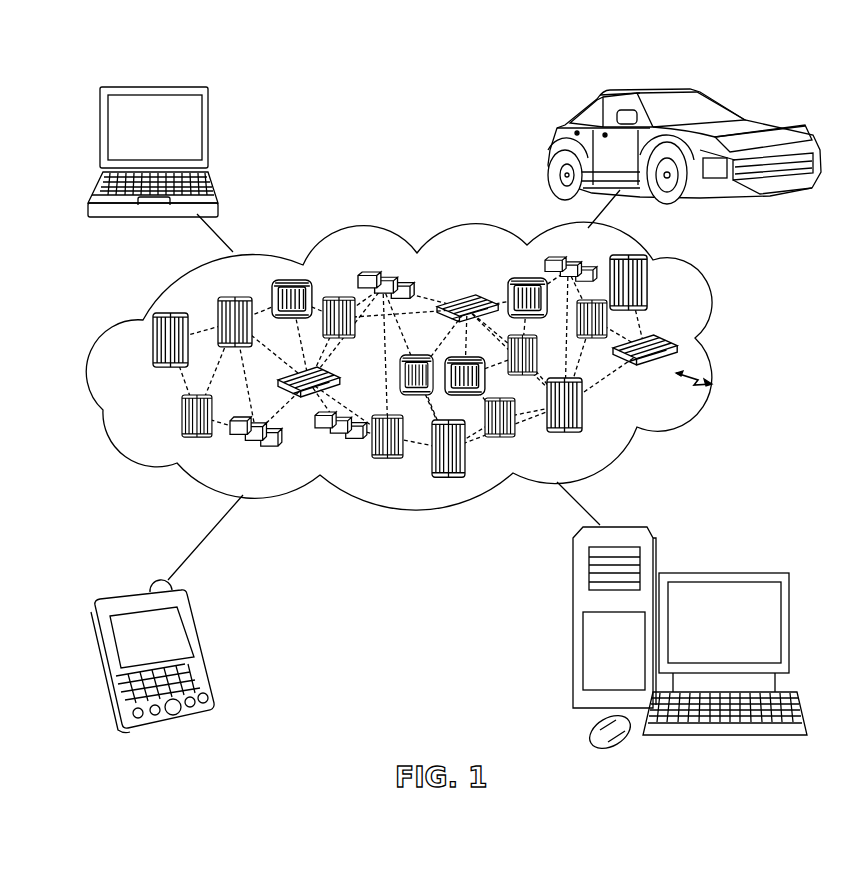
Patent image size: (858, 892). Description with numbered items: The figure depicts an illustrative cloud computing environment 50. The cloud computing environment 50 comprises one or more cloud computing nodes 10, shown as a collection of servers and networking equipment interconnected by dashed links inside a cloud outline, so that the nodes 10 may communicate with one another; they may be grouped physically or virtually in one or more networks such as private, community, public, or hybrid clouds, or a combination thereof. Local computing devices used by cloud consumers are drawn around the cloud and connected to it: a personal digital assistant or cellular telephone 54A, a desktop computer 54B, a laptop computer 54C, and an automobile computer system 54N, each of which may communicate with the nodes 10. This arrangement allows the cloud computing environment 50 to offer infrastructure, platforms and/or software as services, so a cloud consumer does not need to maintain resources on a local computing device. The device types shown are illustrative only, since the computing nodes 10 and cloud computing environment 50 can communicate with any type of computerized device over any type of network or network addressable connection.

The cloud computing nodes 10 is at (703, 388).
The cloud computing environment 50 is at (723, 350).
The personal digital assistant or cellular telephone 54A is at (200, 648).
The desktop computer 54B is at (722, 572).
The laptop computer 54C is at (209, 134).
The automobile computer system 54N is at (552, 148).